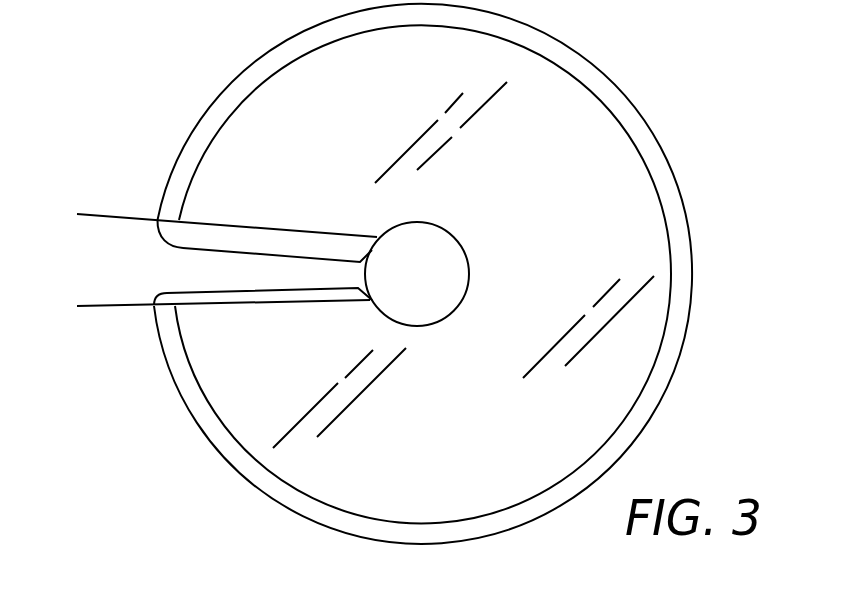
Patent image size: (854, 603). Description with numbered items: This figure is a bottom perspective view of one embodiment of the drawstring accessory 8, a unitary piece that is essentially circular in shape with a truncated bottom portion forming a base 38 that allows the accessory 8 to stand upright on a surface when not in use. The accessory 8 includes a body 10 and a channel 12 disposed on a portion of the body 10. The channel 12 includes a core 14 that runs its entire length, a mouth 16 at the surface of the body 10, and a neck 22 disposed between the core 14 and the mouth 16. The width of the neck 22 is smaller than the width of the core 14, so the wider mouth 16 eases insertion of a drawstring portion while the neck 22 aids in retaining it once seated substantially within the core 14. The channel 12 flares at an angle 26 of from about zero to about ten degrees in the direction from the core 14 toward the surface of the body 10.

The drawstring accessory 8 is at (633, 58).
The body 10 is at (677, 273).
The channel 12 is at (247, 287).
The core 14 is at (433, 260).
The mouth 16 is at (185, 270).
The neck 22 is at (380, 240).
The flare angle 26 is at (88, 226).
The base 38 is at (605, 416).